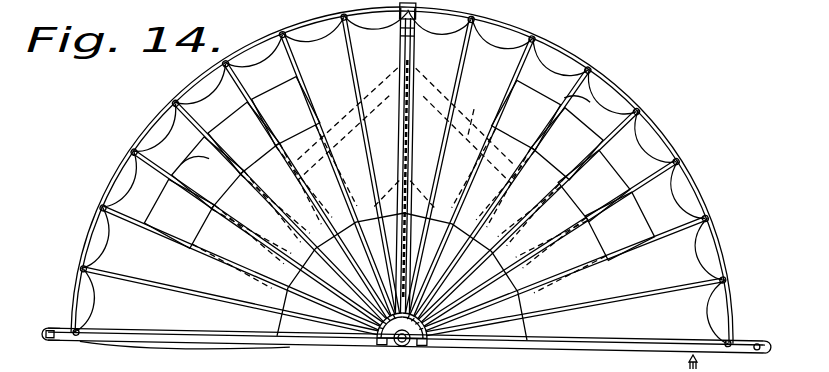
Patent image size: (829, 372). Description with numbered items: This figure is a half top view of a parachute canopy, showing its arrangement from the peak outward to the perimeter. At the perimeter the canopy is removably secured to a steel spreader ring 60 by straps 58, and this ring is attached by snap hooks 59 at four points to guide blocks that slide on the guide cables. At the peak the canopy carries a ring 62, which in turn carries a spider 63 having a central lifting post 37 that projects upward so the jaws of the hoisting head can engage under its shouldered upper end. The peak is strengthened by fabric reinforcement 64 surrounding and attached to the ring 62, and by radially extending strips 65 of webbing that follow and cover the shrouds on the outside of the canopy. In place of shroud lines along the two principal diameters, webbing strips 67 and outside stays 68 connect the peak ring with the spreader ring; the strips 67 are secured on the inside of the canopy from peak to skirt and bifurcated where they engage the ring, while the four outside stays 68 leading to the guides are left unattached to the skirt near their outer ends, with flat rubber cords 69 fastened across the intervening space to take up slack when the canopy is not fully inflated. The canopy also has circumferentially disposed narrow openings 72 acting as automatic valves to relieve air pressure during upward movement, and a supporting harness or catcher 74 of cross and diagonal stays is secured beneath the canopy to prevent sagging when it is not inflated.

The central lifting post 37 is at (404, 346).
The straps 58 is at (722, 288).
The snap hooks 59 is at (103, 292).
The spreader ring 60 is at (100, 215).
The ring 62 is at (388, 340).
The spider 63 is at (418, 342).
The fabric reinforcement 64 is at (300, 346).
The radially extending strips 65 is at (300, 92).
The webbing strips 67 is at (398, 30).
The outside stays 68 is at (408, 92).
The flat rubber cords 69 is at (409, 128).
The narrow openings 72 is at (180, 168).
The supporting harness 74 is at (405, 137).